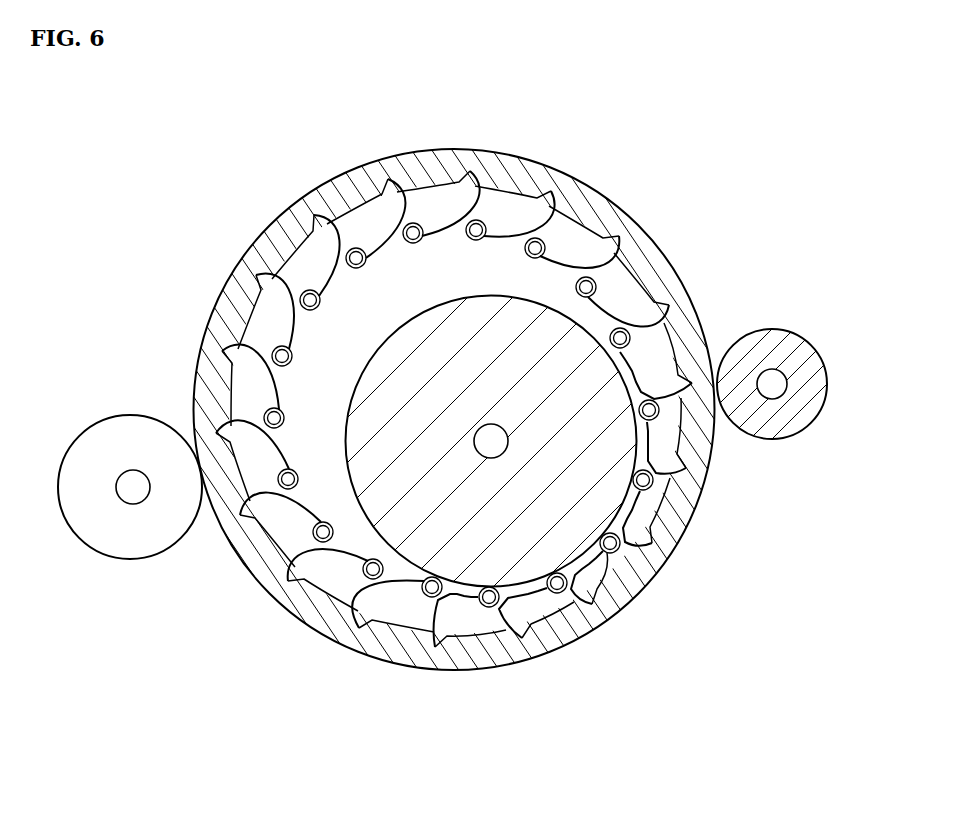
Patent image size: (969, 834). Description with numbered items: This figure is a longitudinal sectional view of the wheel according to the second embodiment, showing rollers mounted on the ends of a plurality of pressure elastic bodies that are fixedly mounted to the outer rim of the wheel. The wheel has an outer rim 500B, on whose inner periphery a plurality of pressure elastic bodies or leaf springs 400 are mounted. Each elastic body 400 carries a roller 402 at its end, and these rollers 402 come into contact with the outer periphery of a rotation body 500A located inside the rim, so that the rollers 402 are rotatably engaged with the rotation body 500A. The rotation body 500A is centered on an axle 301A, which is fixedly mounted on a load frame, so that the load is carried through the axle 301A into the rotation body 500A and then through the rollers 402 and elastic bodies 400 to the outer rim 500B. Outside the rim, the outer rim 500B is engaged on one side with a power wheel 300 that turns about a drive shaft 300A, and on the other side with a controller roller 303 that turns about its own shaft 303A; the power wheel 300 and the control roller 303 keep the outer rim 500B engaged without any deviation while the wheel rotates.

The power wheel 300 is at (167, 548).
The drive shaft 300A is at (133, 487).
The controller roller 303 is at (807, 426).
The shaft 303A is at (772, 386).
The elastic body 400 is at (300, 582).
The roller 402 is at (427, 593).
The rotation body 500A is at (580, 483).
The outer rim of the wheel 500B is at (458, 662).
The axle 301A is at (492, 458).